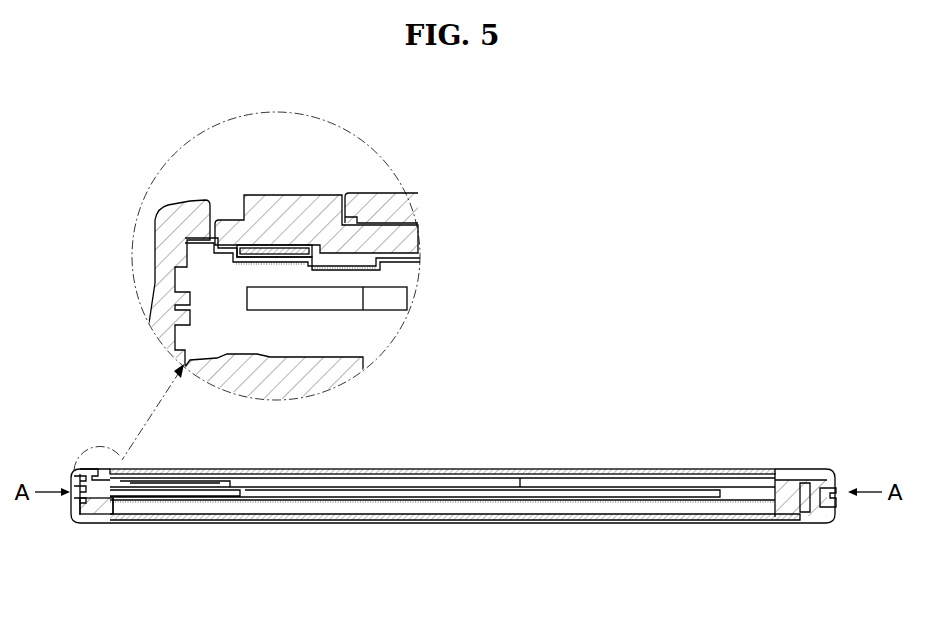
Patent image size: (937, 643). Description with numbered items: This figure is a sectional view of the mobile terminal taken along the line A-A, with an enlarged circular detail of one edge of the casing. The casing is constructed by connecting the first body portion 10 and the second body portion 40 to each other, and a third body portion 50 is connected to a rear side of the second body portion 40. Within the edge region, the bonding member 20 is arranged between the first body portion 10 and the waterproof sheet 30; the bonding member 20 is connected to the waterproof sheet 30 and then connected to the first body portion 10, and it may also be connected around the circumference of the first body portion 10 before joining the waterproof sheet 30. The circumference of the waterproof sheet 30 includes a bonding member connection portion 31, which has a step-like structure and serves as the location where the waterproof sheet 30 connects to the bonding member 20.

The first body portion 10 is at (300, 390).
The bonding member 20 is at (312, 252).
The waterproof sheet 30 is at (385, 270).
The bonding member connection portion 31 is at (258, 246).
The second body portion 40 is at (287, 206).
The third body portion 50 is at (553, 470).